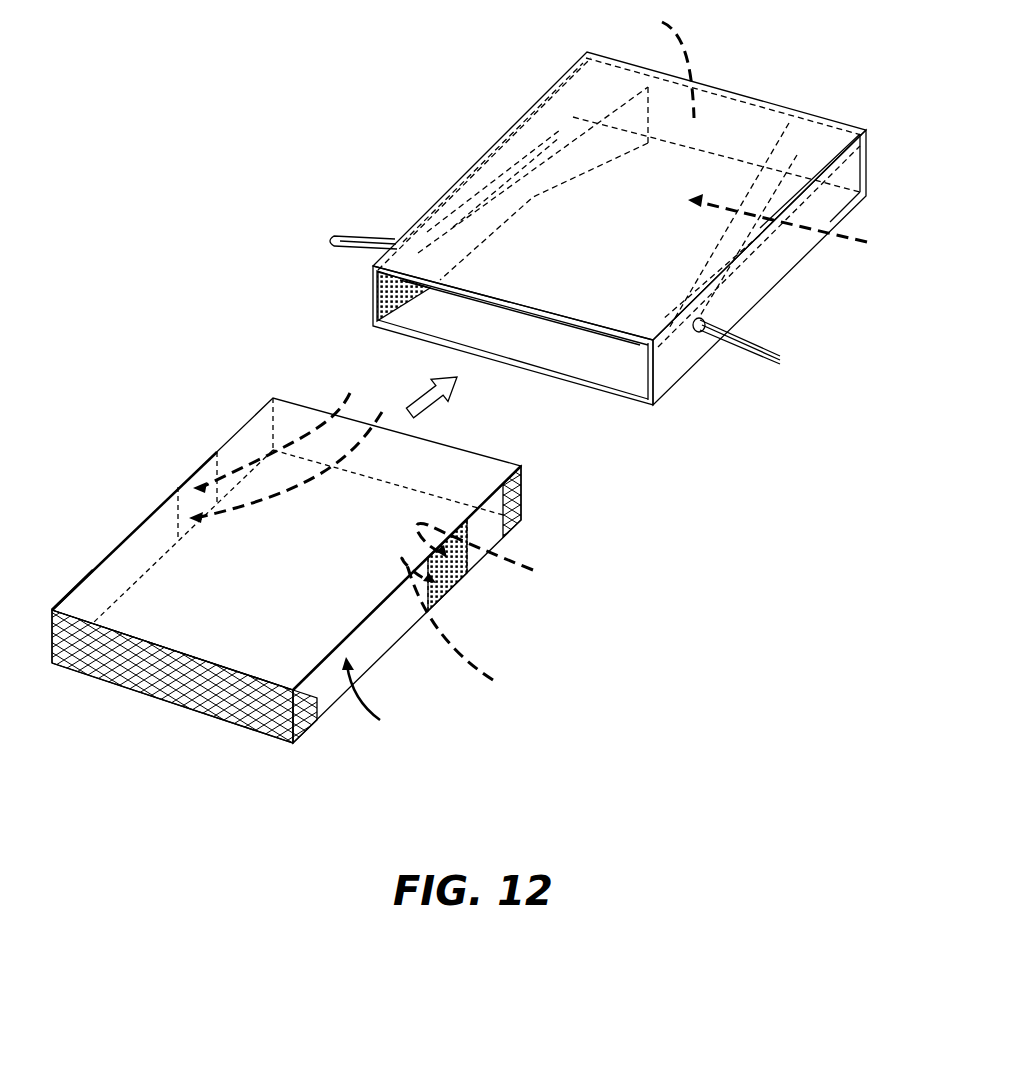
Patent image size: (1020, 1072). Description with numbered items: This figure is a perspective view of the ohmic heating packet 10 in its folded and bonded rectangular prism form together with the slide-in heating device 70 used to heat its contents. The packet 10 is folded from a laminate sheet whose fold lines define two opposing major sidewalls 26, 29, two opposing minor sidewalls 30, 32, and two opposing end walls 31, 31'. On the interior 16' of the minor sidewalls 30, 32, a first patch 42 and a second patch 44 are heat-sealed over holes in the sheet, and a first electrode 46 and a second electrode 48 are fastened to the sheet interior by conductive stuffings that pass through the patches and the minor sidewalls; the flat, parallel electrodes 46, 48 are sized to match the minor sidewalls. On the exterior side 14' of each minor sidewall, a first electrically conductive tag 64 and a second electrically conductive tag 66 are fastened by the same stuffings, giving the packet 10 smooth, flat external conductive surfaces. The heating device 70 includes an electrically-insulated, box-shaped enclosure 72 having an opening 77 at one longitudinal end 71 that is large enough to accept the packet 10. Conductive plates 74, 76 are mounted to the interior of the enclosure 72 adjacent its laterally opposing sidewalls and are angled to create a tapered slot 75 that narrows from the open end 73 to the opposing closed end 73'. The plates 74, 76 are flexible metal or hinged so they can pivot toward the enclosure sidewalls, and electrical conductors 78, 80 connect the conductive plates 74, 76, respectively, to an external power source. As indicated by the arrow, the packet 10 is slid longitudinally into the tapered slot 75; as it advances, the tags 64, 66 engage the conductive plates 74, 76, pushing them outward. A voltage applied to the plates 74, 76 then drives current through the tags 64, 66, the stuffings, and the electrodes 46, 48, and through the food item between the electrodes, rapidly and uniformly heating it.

The ohmic heating packet 10 is at (158, 380).
The exterior side 14' is at (382, 697).
The interior 16' is at (79, 565).
The major sidewall 26 is at (130, 613).
The opposing major sidewall 29 is at (217, 690).
The minor sidewall 30 is at (157, 535).
The end wall 31 is at (172, 676).
The end wall 31' is at (492, 480).
The minor sidewall 32 is at (372, 633).
The first patch 42 is at (278, 436).
The second patch 44 is at (491, 557).
The first electrode 46 is at (295, 455).
The second electrode 48 is at (464, 628).
The first electrically conductive tag 64 is at (195, 478).
The second electrically conductive tag 66 is at (450, 567).
The slide-in heating device 70 is at (343, 85).
The longitudinal end 71 is at (667, 18).
The enclosure 72 is at (770, 262).
The open end 73 is at (705, 278).
The closed end 73' is at (775, 201).
The conductive plate 74 is at (585, 160).
The tapered slot 75 is at (801, 226).
The conductive plate 76 is at (762, 180).
The opening 77 is at (567, 347).
The electrical conductor 78 is at (347, 239).
The electrical conductor 80 is at (748, 357).